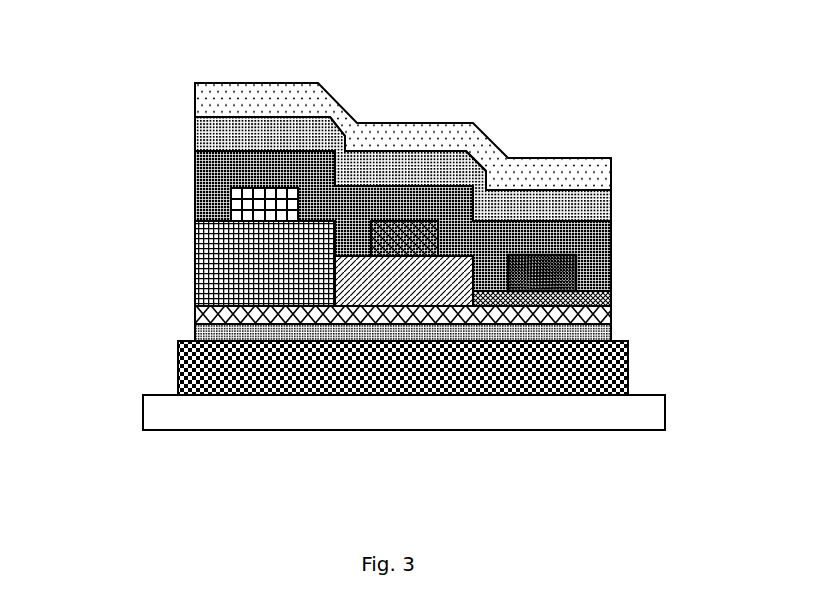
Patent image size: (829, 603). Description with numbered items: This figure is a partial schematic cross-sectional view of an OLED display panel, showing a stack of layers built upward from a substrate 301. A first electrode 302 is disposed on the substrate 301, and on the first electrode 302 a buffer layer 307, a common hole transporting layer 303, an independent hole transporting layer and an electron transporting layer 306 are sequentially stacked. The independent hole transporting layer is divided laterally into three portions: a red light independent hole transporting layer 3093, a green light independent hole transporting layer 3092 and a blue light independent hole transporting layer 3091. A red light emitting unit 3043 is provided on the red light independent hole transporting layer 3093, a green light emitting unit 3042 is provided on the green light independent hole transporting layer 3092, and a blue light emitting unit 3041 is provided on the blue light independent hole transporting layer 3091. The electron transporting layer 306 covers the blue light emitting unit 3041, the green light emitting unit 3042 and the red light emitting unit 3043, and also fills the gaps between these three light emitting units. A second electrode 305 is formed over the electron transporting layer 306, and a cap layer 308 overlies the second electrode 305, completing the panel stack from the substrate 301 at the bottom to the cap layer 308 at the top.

The substrate 301 is at (657, 410).
The first electrode 302 is at (620, 368).
The buffer layer 307 is at (603, 326).
The common hole transporting layer 303 is at (603, 303).
The second electrode 305 is at (603, 203).
The electron transporting layer 306 is at (603, 256).
The cap layer 308 is at (603, 163).
The blue light emitting unit 3041 is at (524, 252).
The green light emitting unit 3042 is at (393, 228).
The red light emitting unit 3043 is at (256, 195).
The blue light independent hole transporting layer 3091 is at (530, 292).
The green light independent hole transporting layer 3092 is at (407, 278).
The red light independent hole transporting layer 3093 is at (275, 252).